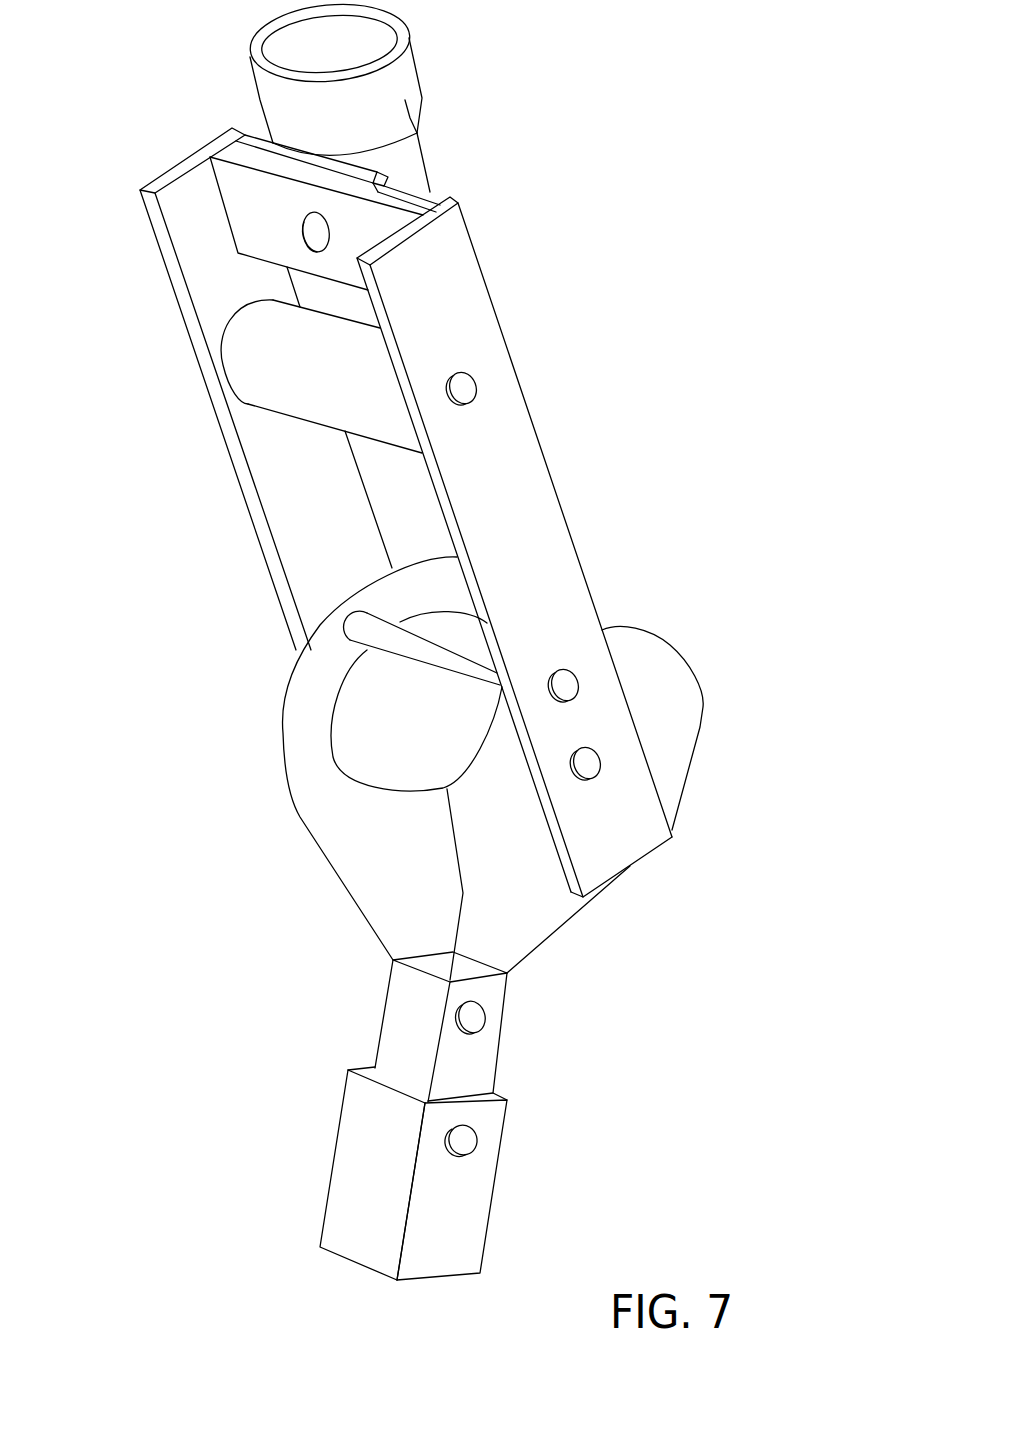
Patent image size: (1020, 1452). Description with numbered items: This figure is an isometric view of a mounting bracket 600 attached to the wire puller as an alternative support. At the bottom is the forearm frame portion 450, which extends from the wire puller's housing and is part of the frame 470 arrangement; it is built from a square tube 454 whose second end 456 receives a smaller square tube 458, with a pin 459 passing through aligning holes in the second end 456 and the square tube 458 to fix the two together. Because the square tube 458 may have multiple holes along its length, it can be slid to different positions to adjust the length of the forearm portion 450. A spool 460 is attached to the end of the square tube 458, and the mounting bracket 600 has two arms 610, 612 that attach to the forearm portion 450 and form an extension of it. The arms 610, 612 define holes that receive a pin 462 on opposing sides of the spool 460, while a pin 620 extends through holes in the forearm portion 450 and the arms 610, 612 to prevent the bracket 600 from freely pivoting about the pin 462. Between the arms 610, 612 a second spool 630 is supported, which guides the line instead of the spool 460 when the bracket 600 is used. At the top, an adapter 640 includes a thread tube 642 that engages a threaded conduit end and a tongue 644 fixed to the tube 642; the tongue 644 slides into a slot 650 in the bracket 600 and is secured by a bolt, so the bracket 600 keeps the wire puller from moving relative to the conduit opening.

The forearm frame portion 450 is at (421, 1116).
The square tube 454 is at (323, 1208).
The second end 456 is at (453, 1207).
The square tube 458 is at (495, 1045).
The pin 459 is at (480, 1135).
The spool 460 is at (433, 788).
The pin 462 is at (598, 762).
The frame 470 is at (800, 744).
The mounting bracket 600 is at (409, 512).
The arm 610 is at (297, 518).
The arm 612 is at (558, 553).
The pin 620 is at (392, 652).
The spool 630 is at (303, 424).
The adapter 640 is at (418, 62).
The thread tube 642 is at (403, 110).
The tongue 644 is at (380, 167).
The slot 650 is at (400, 187).